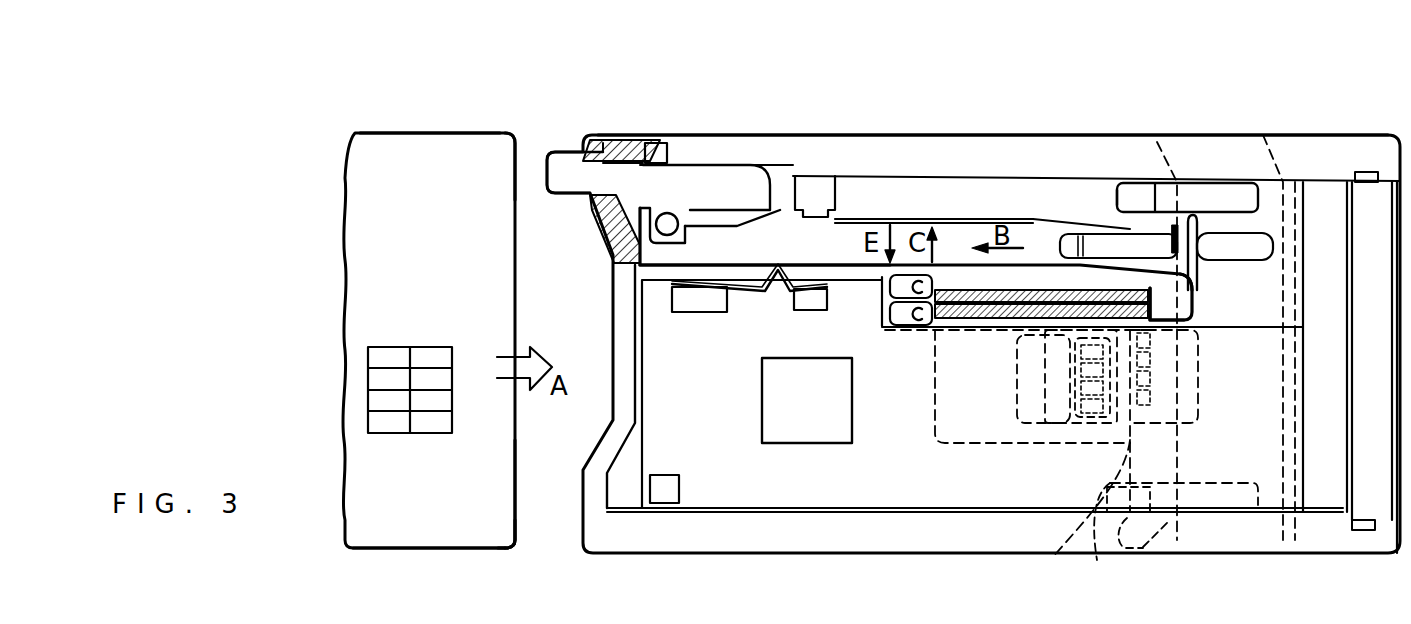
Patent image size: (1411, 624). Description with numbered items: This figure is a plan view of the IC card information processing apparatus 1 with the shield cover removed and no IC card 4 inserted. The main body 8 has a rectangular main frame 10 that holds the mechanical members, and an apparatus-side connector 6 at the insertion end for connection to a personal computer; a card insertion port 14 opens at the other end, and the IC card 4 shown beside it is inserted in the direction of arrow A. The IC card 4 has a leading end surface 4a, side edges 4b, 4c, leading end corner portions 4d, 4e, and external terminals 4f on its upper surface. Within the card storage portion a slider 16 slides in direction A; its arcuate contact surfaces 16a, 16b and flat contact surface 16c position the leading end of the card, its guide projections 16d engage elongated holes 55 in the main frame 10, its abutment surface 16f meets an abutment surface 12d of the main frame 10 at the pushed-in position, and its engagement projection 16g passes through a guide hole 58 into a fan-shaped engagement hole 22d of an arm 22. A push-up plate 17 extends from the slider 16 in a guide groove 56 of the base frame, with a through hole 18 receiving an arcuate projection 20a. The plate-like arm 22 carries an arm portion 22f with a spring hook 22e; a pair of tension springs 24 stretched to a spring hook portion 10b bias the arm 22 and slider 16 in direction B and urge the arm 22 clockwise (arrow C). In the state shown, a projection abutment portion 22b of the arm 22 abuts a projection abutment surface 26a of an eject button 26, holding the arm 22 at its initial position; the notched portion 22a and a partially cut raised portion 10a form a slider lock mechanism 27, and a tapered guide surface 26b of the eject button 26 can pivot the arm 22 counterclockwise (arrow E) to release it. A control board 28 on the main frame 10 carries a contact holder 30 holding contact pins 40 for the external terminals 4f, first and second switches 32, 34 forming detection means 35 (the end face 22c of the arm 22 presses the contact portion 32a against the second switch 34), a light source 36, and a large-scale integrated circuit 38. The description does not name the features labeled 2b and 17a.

The IC card information processing apparatus 1 is at (1342, 112).
The cover section 2b is at (626, 112).
The IC card 4 is at (384, 126).
The leading end surface 4a is at (513, 507).
The side edge 4b is at (457, 550).
The side edge 4c is at (440, 131).
The leading end corner portion 4d is at (503, 550).
The leading end corner portion 4e is at (500, 131).
The external terminals 4f is at (405, 436).
The apparatus-side connector 6 is at (1365, 512).
The main body 8 is at (1018, 128).
The main frame 10 is at (880, 152).
The partially cut raised portion 10a is at (818, 176).
The spring hook portion 10b is at (915, 325).
The abutment surface 12d is at (1262, 136).
The card insertion port 14 is at (625, 330).
The slider 16 is at (1163, 445).
The arcuate contact surface 16a is at (1122, 180).
The arcuate contact surface 16b is at (1126, 549).
The flat contact surface 16c is at (1097, 560).
The guide projections 16d is at (1138, 200).
The abutment surface 16f is at (1180, 195).
The engagement projection 16g is at (1097, 243).
The push-up plate 17 is at (940, 447).
The connector portion 17a is at (1020, 393).
The through hole 18 is at (1035, 430).
The arcuate projection 20a is at (1080, 515).
The arm 22 is at (958, 210).
The notched portion 22a is at (731, 166).
The projection abutment portion 22b is at (652, 140).
The end face 22c is at (852, 270).
The engagement hole 22d is at (1157, 228).
The spring hook 22e is at (1155, 292).
The arm portion 22f is at (1188, 297).
The tension springs 24 is at (986, 320).
The eject button 26 is at (558, 162).
The projection abutment surface 26a is at (703, 208).
The tapered guide surface 26b is at (757, 230).
The slider lock mechanism 27 is at (883, 218).
The control board 28 is at (890, 497).
The contact holder 30 is at (1066, 425).
The first switch 32 is at (694, 305).
The contact portion 32a is at (724, 312).
The second switch 34 is at (801, 306).
The detection means 35 is at (752, 378).
The light source (LED) 36 is at (668, 490).
The large-scale integrated circuit (LSI) 38 is at (779, 432).
The contact pins 40 is at (1152, 398).
The elongated holes 55 is at (1217, 195).
The guide groove 56 is at (935, 380).
The guide hole 58 is at (1263, 245).